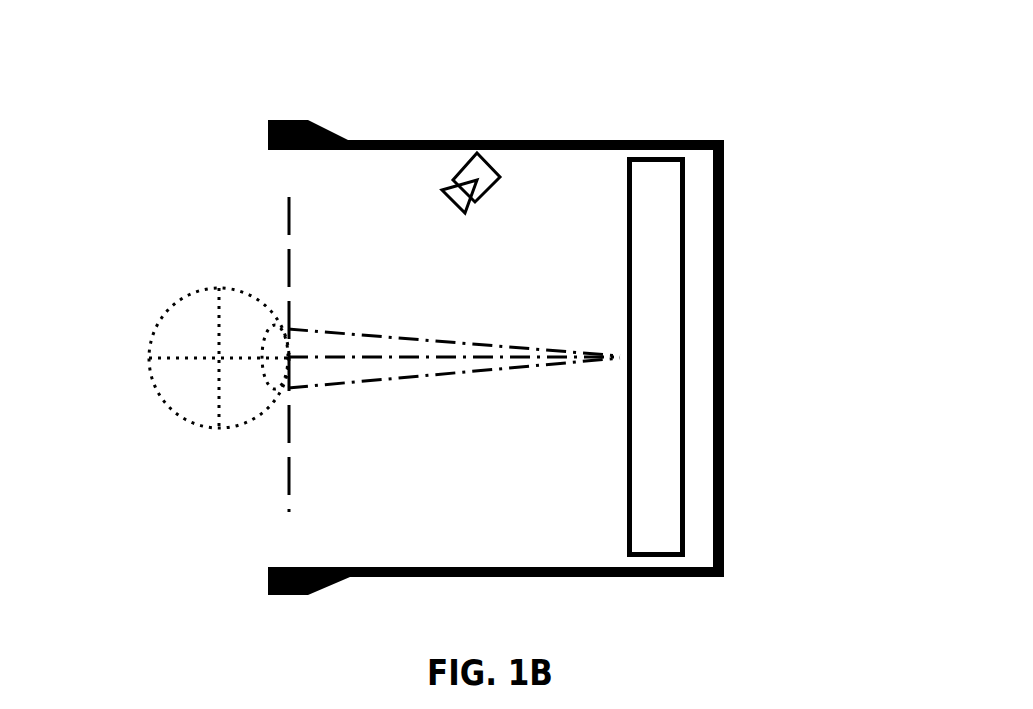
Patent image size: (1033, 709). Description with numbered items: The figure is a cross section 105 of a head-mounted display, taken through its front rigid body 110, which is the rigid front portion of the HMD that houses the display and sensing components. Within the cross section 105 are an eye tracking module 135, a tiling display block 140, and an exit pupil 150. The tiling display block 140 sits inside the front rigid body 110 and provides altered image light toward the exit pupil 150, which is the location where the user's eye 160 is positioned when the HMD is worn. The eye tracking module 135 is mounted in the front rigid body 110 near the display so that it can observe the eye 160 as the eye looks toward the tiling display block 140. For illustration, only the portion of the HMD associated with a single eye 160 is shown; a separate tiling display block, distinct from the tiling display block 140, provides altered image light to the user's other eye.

The cross section 105 is at (83, 65).
The front rigid body 110 is at (685, 142).
The eye tracking module 135 is at (477, 180).
The tiling display block 140 is at (685, 247).
The exit pupil 150 is at (288, 492).
The eye 160 is at (182, 298).